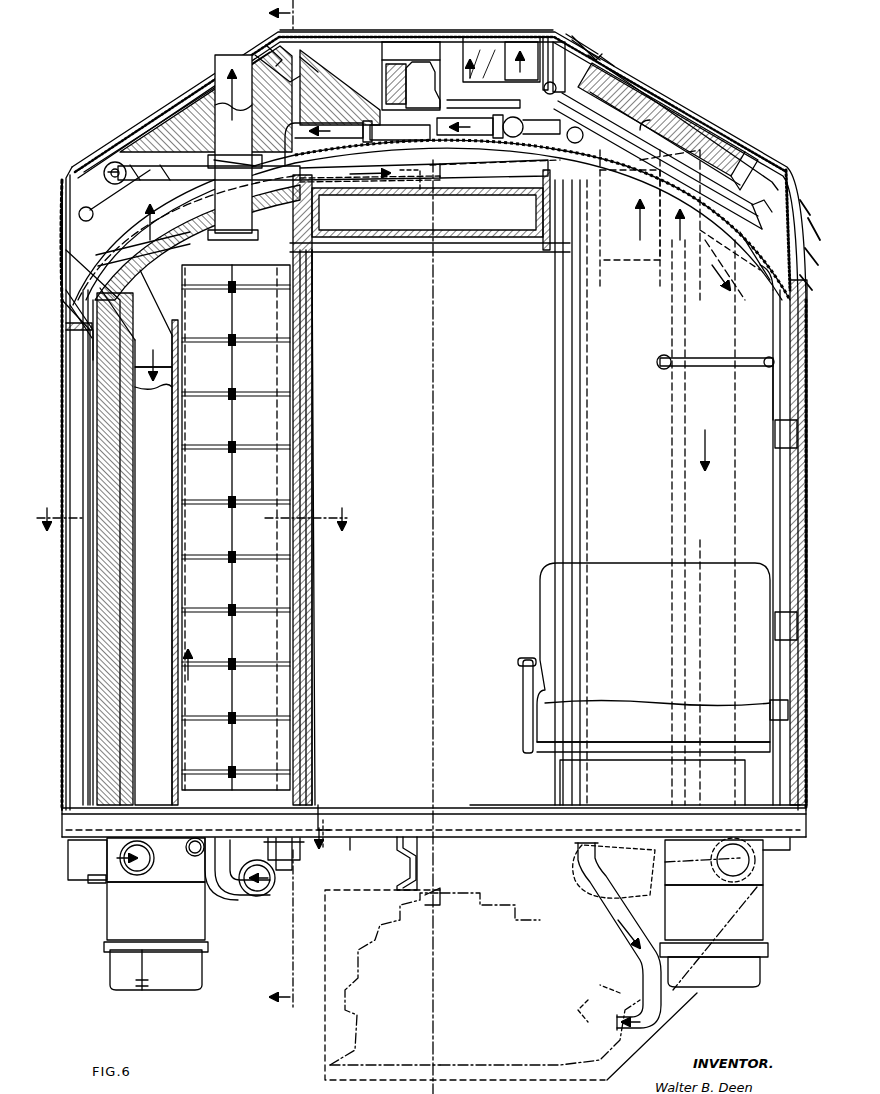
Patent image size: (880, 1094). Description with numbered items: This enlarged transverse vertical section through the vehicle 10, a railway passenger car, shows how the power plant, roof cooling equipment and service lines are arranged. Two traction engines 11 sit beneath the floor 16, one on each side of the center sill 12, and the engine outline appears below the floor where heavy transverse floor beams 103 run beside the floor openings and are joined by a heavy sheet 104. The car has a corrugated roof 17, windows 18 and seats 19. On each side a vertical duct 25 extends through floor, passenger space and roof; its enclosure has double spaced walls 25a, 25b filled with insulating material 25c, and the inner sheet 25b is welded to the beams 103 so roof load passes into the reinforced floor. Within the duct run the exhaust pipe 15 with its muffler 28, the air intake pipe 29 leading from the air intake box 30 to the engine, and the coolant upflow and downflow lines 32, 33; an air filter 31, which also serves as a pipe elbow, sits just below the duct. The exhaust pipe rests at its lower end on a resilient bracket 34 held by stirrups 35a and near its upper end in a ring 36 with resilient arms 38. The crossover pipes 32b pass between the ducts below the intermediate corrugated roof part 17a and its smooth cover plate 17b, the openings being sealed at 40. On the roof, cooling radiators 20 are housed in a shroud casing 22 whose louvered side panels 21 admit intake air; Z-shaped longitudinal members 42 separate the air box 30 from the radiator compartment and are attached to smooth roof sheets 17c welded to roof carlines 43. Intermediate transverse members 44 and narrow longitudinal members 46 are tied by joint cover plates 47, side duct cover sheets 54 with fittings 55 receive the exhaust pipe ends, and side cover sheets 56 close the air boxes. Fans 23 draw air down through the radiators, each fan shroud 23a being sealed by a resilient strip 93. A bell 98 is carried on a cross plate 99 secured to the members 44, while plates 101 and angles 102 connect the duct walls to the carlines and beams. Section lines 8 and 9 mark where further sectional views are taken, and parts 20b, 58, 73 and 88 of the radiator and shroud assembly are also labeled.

The section line 8- 8 is at (351, 547).
The section line 9- 9 is at (192, 509).
The vehicle 10 is at (137, 118).
The traction engines 11 is at (358, 1072).
The center sill 12 is at (398, 874).
The exhaust stack 15 is at (232, 68).
The floor 16 is at (760, 140).
The corrugated roof 17 is at (592, 170).
The intermediate corrugated part of main roof 17a is at (430, 170).
The smooth heavy cover plate 17b is at (410, 170).
The smooth roof sheets 17c is at (745, 222).
The windows 18 is at (806, 512).
The seats 19 is at (538, 620).
The cooling radiators 20 is at (688, 100).
The heater casing 20b is at (700, 112).
The side sheets or panels 21 is at (800, 222).
The shroud casing 22 is at (600, 50).
The blower housing 23 is at (510, 40).
The fan shroud 23a is at (528, 44).
The vertical ducts 25 is at (312, 430).
The outer duct wall 25a is at (315, 450).
The inner duct wall sheet 25b is at (303, 466).
The heat-insulating and sound-proofing material 25c is at (307, 485).
The exhaust muffler 28 is at (265, 327).
The air intake pipe line 29 is at (160, 428).
The air intake box 30 is at (80, 238).
The air filter 31 is at (107, 936).
The coolant upflow pipe lines 32 is at (146, 162).
The crossover pipes 32b is at (355, 182).
The coolant downflow pipe lines 33 is at (345, 124).
The resilient bracket 34 is at (214, 885).
The stirrups 35a is at (275, 878).
The ring 36 is at (225, 155).
The resilient arms 38 is at (248, 163).
The seal 40 is at (325, 206).
The Z-shaped longitudinal structural frame members 42 is at (78, 214).
The roof carlines 43 is at (752, 240).
The intermediate transverse structural frame members 44 is at (185, 118).
The narrow Z-shaped longitudinal frame members 46 is at (292, 80).
The joint cover plates 47 is at (300, 57).
The side intermediate duct cover sheets 54 is at (165, 109).
The fittings 55 is at (266, 45).
The side cover sheets 56 is at (68, 252).
The hinge 58 is at (612, 62).
The cover 73 is at (712, 128).
The pivot 88 is at (556, 78).
The resilient sealing strip 93 is at (556, 38).
The bell 98 is at (420, 60).
The cross plate 99 is at (392, 46).
The plates 101 is at (68, 290).
The angles 102 is at (178, 298).
The transverse floor beams 103 is at (356, 842).
The heavy sheet 104 is at (380, 822).